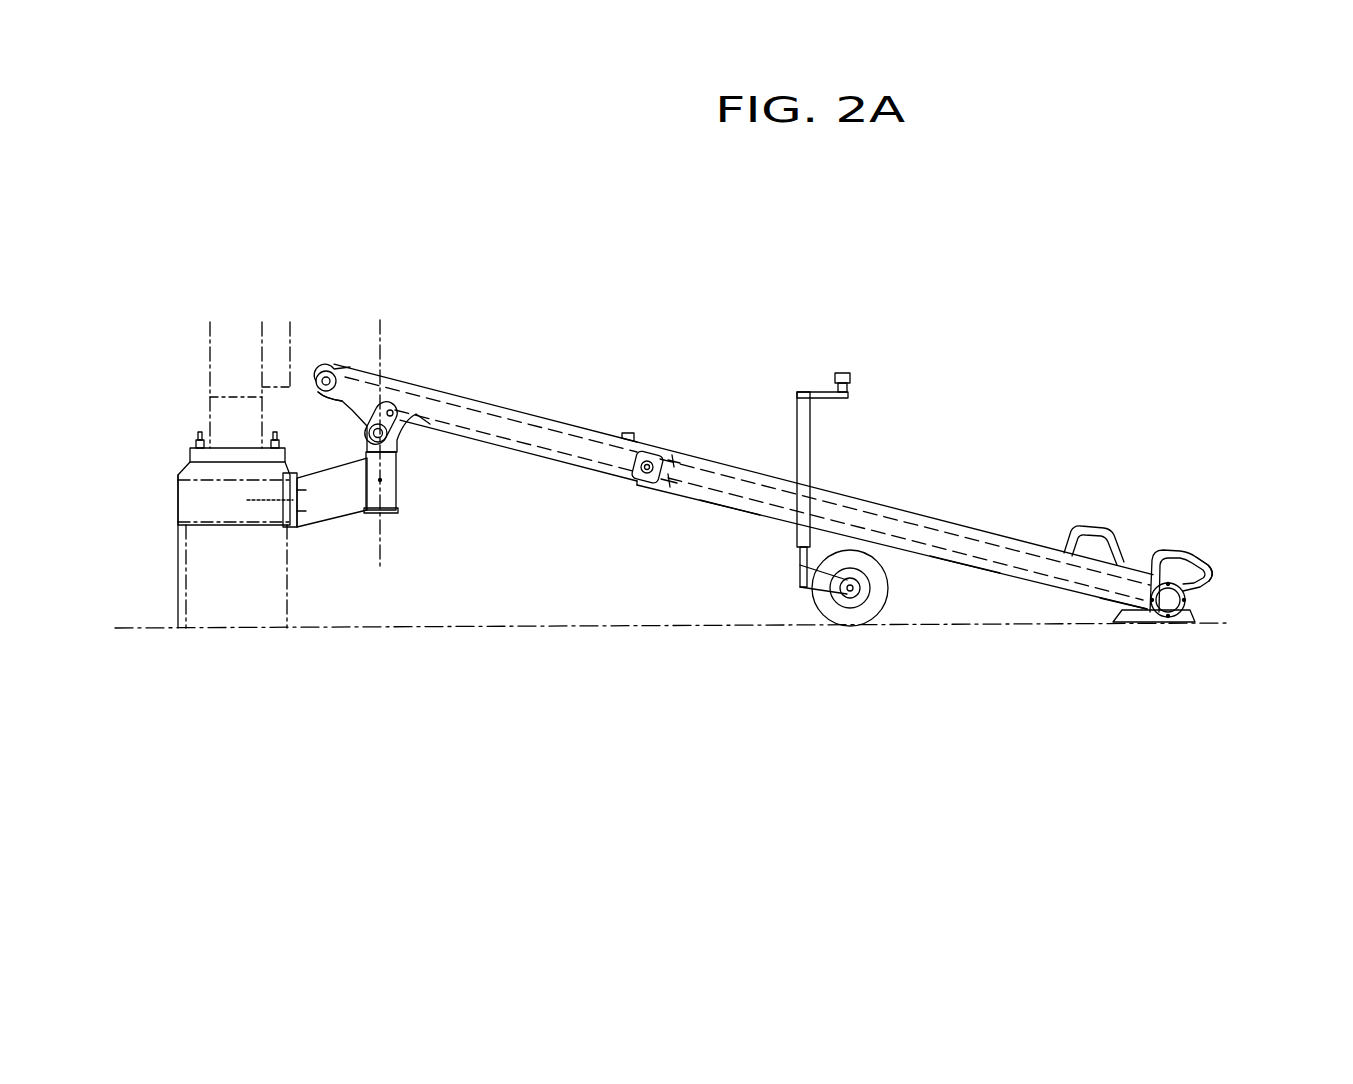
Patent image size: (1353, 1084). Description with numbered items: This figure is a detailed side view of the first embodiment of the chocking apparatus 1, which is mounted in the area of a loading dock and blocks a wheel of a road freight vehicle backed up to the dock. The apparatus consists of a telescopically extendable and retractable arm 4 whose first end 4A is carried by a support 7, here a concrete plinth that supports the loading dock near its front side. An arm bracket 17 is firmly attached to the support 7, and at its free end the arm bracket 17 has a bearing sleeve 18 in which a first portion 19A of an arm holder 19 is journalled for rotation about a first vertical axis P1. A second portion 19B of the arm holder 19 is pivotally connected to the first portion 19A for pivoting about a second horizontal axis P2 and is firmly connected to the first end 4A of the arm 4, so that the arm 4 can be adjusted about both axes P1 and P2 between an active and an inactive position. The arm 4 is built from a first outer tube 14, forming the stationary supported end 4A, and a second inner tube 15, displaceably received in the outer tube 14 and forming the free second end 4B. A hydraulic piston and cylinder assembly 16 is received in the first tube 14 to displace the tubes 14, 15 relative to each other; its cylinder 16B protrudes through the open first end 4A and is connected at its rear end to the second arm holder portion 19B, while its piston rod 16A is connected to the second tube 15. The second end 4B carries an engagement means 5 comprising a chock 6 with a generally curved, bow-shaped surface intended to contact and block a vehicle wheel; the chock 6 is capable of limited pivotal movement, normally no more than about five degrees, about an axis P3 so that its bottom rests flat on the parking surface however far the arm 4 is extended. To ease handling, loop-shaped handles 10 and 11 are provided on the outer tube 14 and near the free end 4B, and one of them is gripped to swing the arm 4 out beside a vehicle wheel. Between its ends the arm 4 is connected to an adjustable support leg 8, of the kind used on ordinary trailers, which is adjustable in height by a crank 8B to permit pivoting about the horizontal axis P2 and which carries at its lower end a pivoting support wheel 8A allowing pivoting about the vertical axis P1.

The chocking apparatus 1 is at (677, 560).
The arm 4 is at (1052, 630).
The first end of the arm 4A is at (357, 370).
The second end of the arm 4B is at (1143, 594).
The engagement means 5 is at (1203, 650).
The chock 6 is at (1177, 550).
The support 7 is at (172, 646).
The support leg 8 is at (901, 392).
The support wheel 8A is at (852, 615).
The crank 8B is at (852, 377).
The handle 10 is at (1207, 568).
The handle 11 is at (1078, 522).
The first outer tube 14 is at (743, 511).
The second inner tube 15 is at (970, 566).
The hydraulic piston and cylinder assembly 16 is at (743, 403).
The piston rod 16A is at (651, 458).
The cylinder 16B is at (455, 395).
The arm bracket 17 is at (342, 493).
The bearing sleeve 18 is at (390, 497).
The arm holder 19 is at (311, 327).
The first portion of the arm holder 19A is at (395, 458).
The second portion of the arm holder 19B is at (345, 397).
The first vertical axis P1 is at (385, 347).
The second horizontal axis P2 is at (365, 513).
The axis P3 is at (1188, 577).